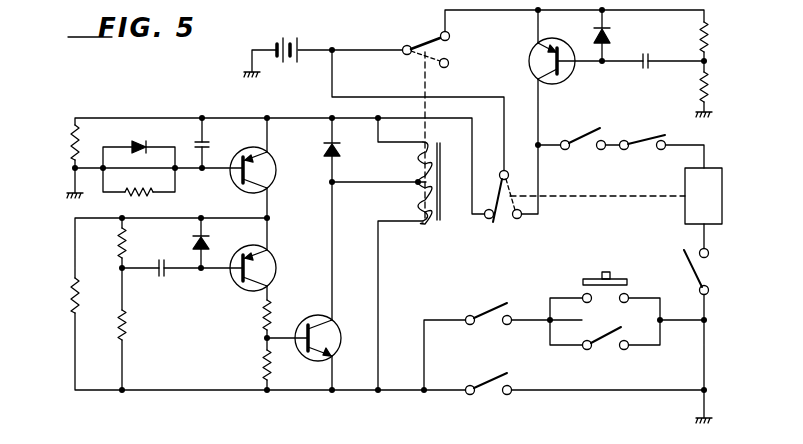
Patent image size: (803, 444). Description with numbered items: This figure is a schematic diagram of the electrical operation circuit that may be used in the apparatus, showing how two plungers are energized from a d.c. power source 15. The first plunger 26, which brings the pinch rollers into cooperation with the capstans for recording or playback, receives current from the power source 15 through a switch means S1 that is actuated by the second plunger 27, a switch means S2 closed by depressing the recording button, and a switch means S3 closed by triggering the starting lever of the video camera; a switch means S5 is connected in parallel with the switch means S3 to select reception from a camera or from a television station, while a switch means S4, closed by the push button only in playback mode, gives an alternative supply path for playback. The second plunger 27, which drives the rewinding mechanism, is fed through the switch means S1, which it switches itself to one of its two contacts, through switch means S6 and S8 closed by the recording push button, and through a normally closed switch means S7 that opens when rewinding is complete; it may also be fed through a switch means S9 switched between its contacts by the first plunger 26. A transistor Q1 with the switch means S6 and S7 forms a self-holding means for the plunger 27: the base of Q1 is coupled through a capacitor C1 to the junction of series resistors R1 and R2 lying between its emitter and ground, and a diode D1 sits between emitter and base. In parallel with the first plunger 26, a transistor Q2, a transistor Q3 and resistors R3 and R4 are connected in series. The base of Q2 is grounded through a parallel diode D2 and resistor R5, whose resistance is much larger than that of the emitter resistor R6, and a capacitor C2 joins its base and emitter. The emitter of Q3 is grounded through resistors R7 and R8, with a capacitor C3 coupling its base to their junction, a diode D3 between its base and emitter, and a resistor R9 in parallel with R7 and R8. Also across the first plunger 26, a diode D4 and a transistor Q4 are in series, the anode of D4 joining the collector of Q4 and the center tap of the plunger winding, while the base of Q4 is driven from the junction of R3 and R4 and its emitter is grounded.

The d.c. power source 15 is at (296, 58).
The first plunger 26 is at (434, 222).
The second plunger 27 is at (688, 180).
The resistor R1 is at (709, 37).
The resistor R2 is at (709, 89).
The resistor R3 is at (262, 313).
The resistor R4 is at (262, 363).
The resistor R5 is at (139, 176).
The resistor R6 is at (71, 148).
The resistor R7 is at (117, 243).
The resistor R8 is at (127, 326).
The resistor R9 is at (70, 296).
The capacitor C1 is at (648, 42).
The capacitor C2 is at (209, 145).
The capacitor C3 is at (163, 276).
The diode D1 is at (607, 37).
The diode D2 is at (130, 143).
The diode D3 is at (194, 238).
The diode D4 is at (325, 150).
The transistor Q1 is at (530, 46).
The transistor Q2 is at (272, 184).
The transistor Q3 is at (282, 248).
The transistor Q4 is at (320, 318).
The switch means S1 is at (501, 186).
The switch means S2 is at (489, 308).
The switch means S3 is at (600, 278).
The switch means S4 is at (489, 378).
The switch means S5 is at (600, 340).
The switch means S6 is at (589, 130).
The switch means S7 is at (658, 132).
The switch means S8 is at (688, 266).
The switch means S9 is at (432, 40).